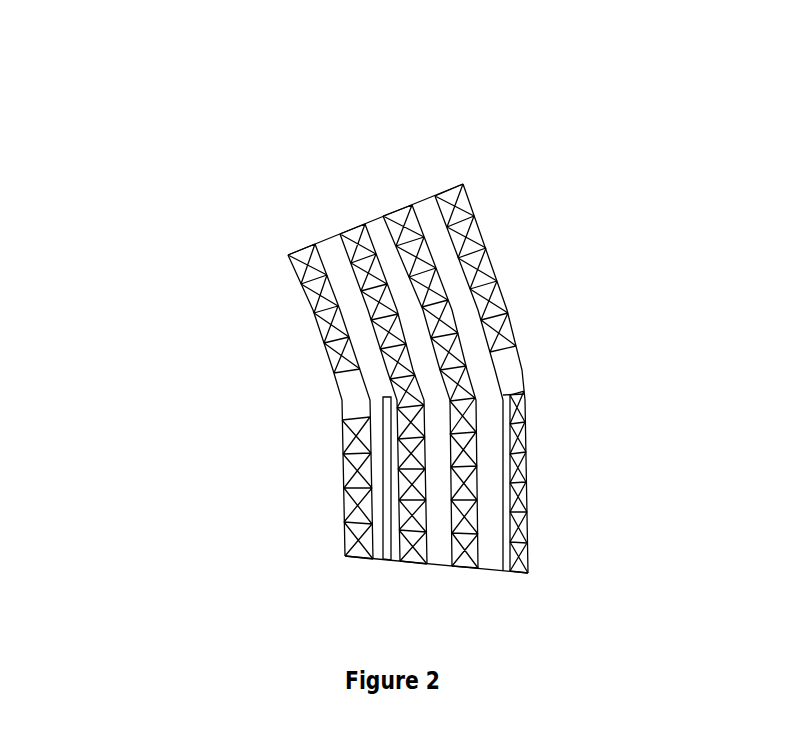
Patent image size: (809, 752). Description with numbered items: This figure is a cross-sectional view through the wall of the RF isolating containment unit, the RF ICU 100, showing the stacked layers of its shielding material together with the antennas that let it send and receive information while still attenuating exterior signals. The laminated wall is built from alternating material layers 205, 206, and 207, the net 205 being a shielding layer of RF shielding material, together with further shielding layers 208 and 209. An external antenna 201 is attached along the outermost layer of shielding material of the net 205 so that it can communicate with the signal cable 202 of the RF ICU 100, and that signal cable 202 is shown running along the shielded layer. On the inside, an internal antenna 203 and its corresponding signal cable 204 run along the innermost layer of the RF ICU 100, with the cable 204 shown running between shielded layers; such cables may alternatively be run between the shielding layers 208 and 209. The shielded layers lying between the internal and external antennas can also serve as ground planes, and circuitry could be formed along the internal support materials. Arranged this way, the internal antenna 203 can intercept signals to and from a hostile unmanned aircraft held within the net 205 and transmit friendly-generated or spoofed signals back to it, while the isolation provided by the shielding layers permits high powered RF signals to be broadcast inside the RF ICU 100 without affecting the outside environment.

The RF ICU 100 is at (583, 526).
The external antenna 201 is at (524, 371).
The signal cable 202 is at (521, 482).
The internal antenna 203 is at (342, 397).
The signal cable 204 is at (384, 508).
The net 205 is at (458, 185).
The material layer 206 is at (443, 248).
The material layer 207 is at (400, 205).
The shielding layer 208 is at (345, 225).
The shielding layer 209 is at (300, 247).